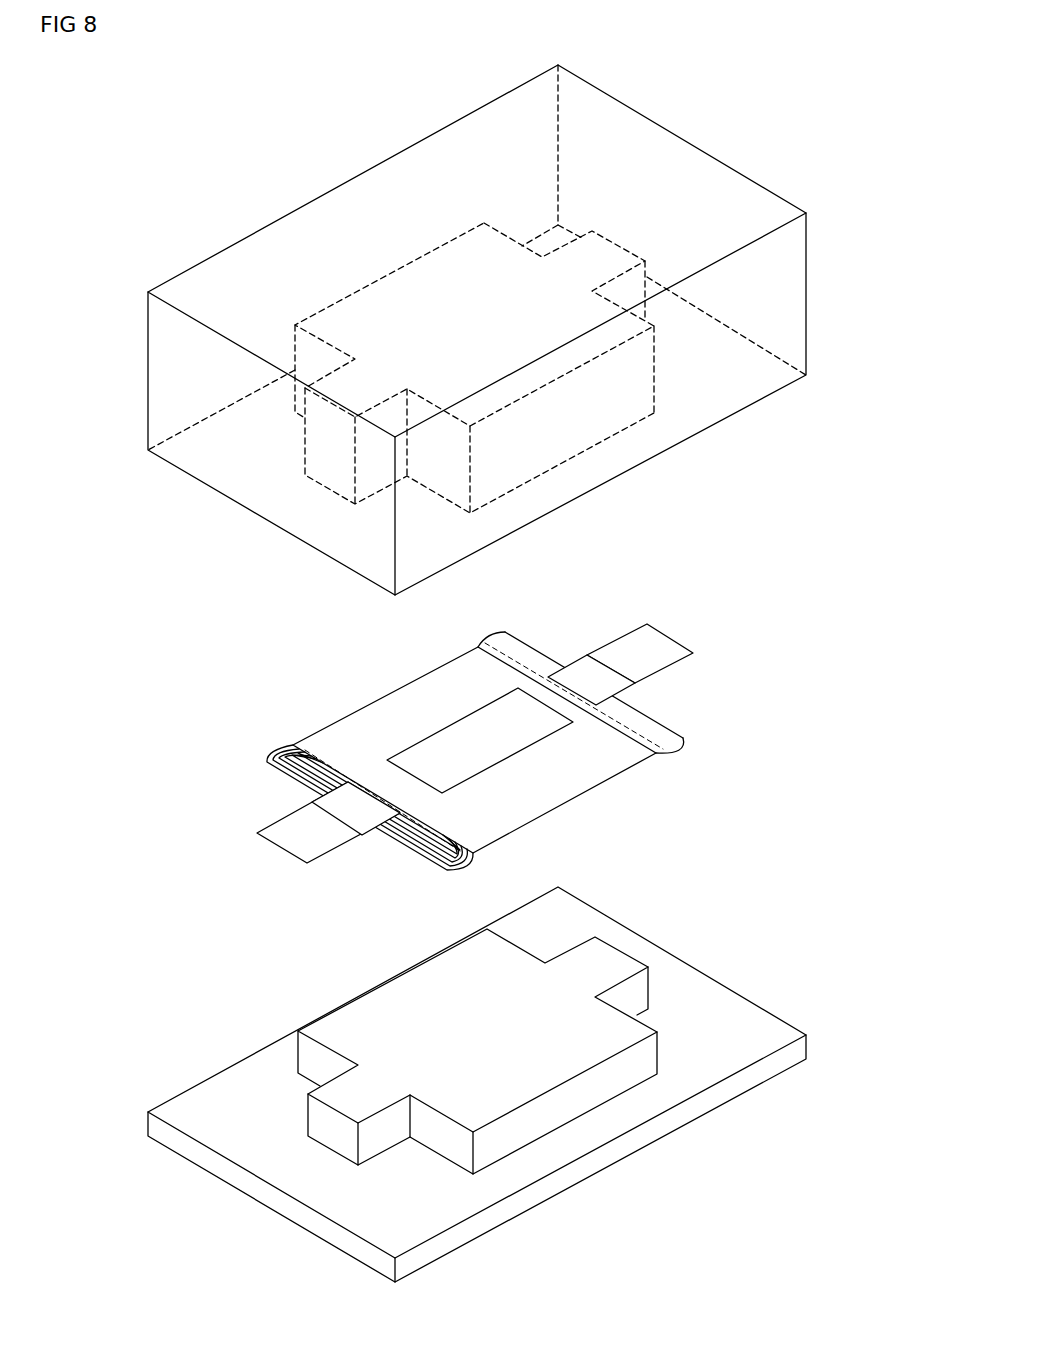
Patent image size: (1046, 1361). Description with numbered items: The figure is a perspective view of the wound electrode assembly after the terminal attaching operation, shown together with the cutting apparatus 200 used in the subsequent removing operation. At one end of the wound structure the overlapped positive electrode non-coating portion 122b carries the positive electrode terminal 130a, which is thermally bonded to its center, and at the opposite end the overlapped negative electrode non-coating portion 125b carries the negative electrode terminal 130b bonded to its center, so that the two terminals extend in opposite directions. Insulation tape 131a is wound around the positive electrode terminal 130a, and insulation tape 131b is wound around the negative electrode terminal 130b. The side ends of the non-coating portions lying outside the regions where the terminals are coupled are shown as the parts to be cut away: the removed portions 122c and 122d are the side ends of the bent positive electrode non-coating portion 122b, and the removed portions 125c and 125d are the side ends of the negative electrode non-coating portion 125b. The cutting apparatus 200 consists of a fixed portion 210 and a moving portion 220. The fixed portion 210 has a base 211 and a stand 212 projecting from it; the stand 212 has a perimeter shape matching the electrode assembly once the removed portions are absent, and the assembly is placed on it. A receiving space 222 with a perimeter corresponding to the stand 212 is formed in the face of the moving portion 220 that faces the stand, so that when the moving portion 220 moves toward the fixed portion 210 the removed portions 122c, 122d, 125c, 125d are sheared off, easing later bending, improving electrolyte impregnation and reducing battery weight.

The cutting apparatus 200 is at (158, 1178).
The fixed portion 210 is at (628, 1162).
The base 211 is at (283, 1179).
The stand 212 is at (307, 1055).
The moving portion 220 is at (218, 478).
The receiving space 222 is at (563, 421).
The positive electrode non-coating portion 122b is at (410, 830).
The removed portion 122c is at (285, 755).
The removed portion 122d is at (458, 862).
The negative electrode non-coating portion 125b is at (657, 713).
The removed portion 125c is at (497, 643).
The removed portion 125d is at (668, 743).
The positive electrode terminal 130a is at (316, 852).
The negative electrode terminal 130b is at (632, 640).
The insulation tape 131a is at (318, 803).
The insulation tape 131b is at (585, 655).